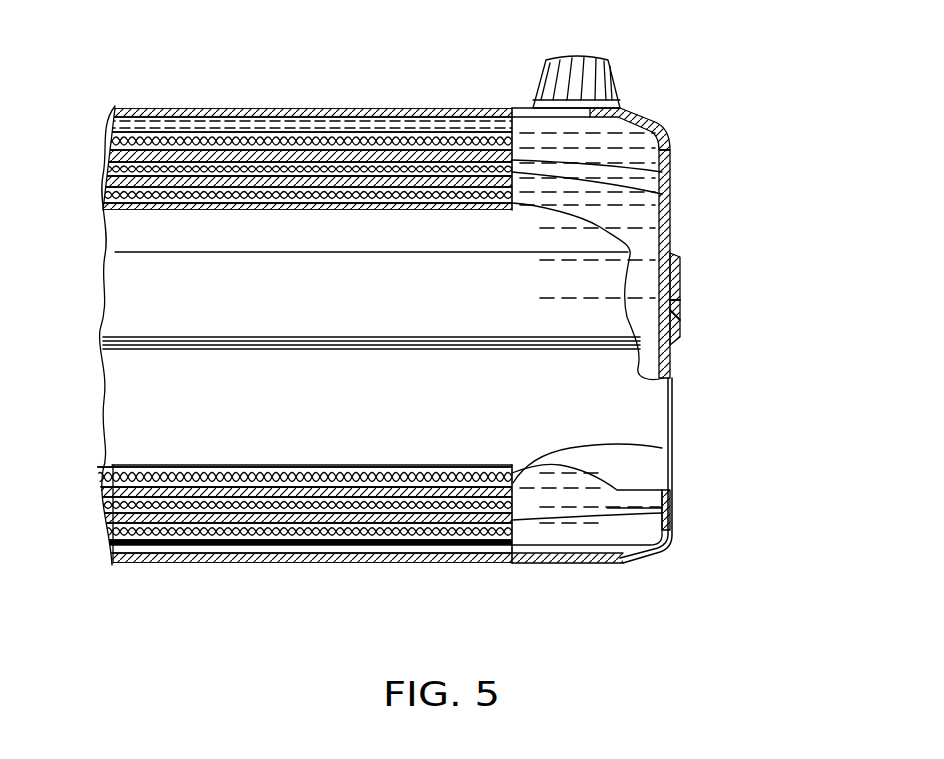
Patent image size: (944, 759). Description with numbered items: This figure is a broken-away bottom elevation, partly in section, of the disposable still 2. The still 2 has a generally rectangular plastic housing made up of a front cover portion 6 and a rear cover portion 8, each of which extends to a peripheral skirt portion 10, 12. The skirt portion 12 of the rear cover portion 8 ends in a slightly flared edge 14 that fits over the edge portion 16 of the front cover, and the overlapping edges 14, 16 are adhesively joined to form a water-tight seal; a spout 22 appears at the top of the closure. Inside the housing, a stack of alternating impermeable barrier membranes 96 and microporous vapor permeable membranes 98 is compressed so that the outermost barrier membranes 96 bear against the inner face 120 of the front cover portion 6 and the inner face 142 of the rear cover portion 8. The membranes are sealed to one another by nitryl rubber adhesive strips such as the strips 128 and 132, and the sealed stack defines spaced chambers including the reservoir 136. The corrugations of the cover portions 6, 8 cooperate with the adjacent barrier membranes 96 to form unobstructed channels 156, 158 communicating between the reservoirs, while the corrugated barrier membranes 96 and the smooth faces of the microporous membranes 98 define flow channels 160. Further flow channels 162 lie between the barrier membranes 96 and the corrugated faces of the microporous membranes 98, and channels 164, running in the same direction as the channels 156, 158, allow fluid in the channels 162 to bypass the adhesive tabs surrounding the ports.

The disposable still 2 is at (731, 572).
The front cover portion 6 is at (428, 108).
The rear cover portion 8 is at (265, 563).
The peripheral skirt portion 10 is at (670, 143).
The peripheral skirt portion 12 is at (673, 393).
The flared edge 14 is at (681, 283).
The edge portion 16 is at (681, 303).
The dispensing spout 22 is at (612, 80).
The impermeable barrier membrane 96 is at (167, 140).
The microporous vapor permeable membrane 98 is at (378, 135).
The inner face of front cover portion 120 is at (487, 118).
The adhesive strip 128 is at (452, 140).
The adhesive strip 132 is at (662, 172).
The reservoir 136 is at (662, 130).
The inner face of rear cover portion 142 is at (500, 547).
The channel 156 is at (323, 108).
The channel 158 is at (442, 547).
The flow channel 160 is at (280, 148).
The flow channel 162 is at (193, 140).
The channel 164 is at (247, 160).